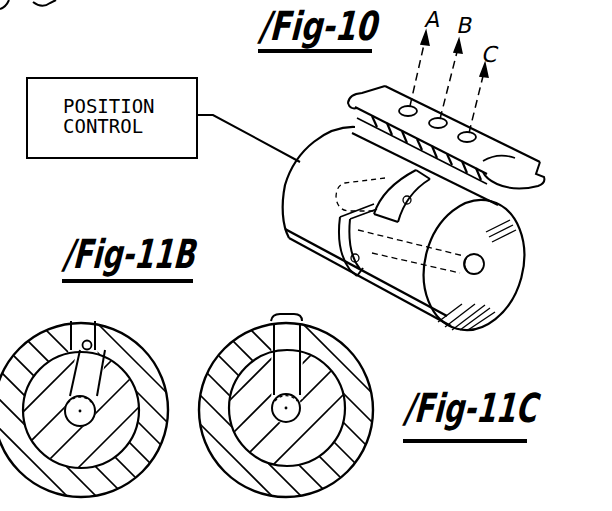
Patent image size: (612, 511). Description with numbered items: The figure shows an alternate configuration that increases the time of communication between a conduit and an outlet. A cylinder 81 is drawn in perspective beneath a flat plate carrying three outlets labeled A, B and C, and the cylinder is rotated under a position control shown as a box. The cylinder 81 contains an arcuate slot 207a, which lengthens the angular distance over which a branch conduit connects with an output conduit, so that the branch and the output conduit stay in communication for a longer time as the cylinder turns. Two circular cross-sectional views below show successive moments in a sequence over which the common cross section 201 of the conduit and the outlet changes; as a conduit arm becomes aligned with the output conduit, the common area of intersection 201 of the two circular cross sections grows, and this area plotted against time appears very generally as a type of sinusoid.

In FIG. 10, the arcuate slot 207a is at (311, 139).
In FIG. 10, the cylinder 81 is at (460, 203).
In FIG. 11B, the common cross section 201 is at (88, 341).
In FIG. 11C, the common cross section 201 is at (286, 314).